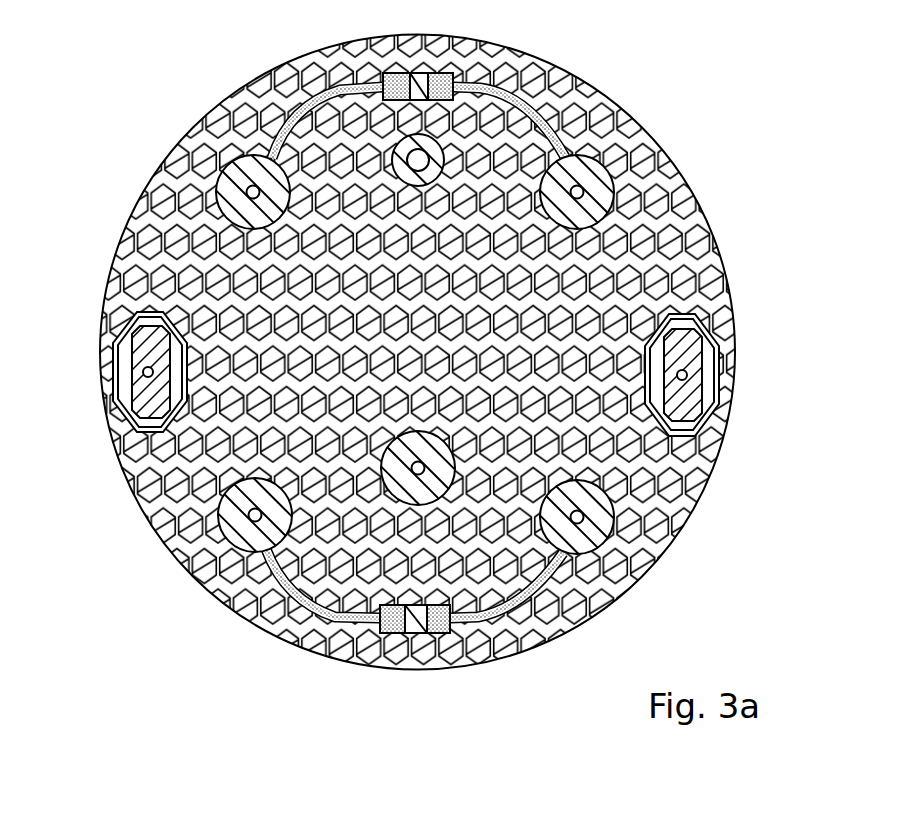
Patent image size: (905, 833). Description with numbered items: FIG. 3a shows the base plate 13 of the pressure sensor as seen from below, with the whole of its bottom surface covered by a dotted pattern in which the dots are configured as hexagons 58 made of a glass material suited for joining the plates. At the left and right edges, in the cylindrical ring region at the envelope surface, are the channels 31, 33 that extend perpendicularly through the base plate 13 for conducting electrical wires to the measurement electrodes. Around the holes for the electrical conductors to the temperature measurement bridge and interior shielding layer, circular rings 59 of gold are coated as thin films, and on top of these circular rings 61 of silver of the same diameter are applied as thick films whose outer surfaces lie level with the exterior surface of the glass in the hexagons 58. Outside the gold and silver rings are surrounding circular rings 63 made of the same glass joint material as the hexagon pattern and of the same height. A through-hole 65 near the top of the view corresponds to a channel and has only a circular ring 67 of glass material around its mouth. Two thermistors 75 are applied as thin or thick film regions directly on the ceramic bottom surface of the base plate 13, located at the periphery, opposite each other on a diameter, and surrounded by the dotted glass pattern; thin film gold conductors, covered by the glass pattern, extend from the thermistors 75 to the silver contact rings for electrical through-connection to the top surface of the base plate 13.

The base plate 13 is at (190, 102).
The hexagons 58 is at (707, 285).
The channel 31 is at (140, 372).
The channel 33 is at (690, 374).
The circular rings of gold 59 is at (557, 577).
The circular rings of silver 61 is at (557, 577).
The surrounding circular rings 63 is at (603, 542).
The through-hole 65 is at (425, 161).
The circular ring of glass material 67 is at (539, 111).
The thermistors 75 is at (460, 98).